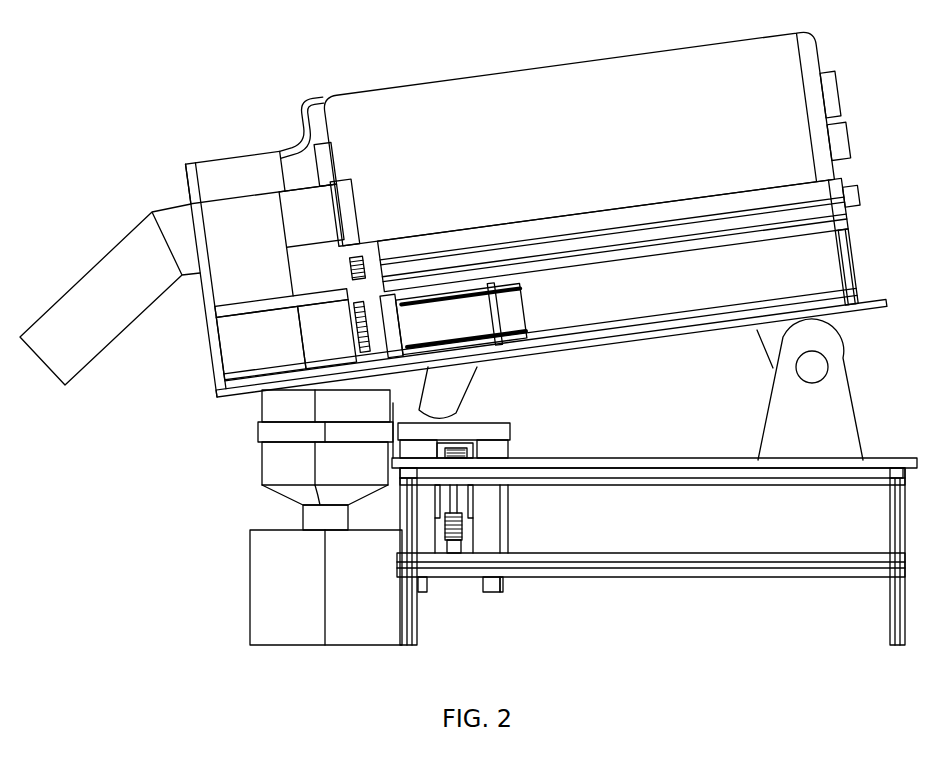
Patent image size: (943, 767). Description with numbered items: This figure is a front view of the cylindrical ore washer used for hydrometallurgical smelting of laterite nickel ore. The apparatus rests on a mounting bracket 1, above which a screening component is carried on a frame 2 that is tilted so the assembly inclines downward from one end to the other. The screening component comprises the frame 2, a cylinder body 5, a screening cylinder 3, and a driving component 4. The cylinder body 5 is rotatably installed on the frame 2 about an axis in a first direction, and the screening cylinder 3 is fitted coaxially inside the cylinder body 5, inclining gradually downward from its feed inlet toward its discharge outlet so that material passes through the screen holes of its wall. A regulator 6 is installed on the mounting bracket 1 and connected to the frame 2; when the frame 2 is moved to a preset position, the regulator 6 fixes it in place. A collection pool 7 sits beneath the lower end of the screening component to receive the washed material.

The mounting bracket 1 is at (737, 470).
The frame 2 is at (860, 298).
The screening cylinder 3 is at (233, 177).
The driving component 4 is at (783, 210).
The cylinder body 5 is at (443, 113).
The regulator 6 is at (456, 547).
The collection pool 7 is at (272, 577).